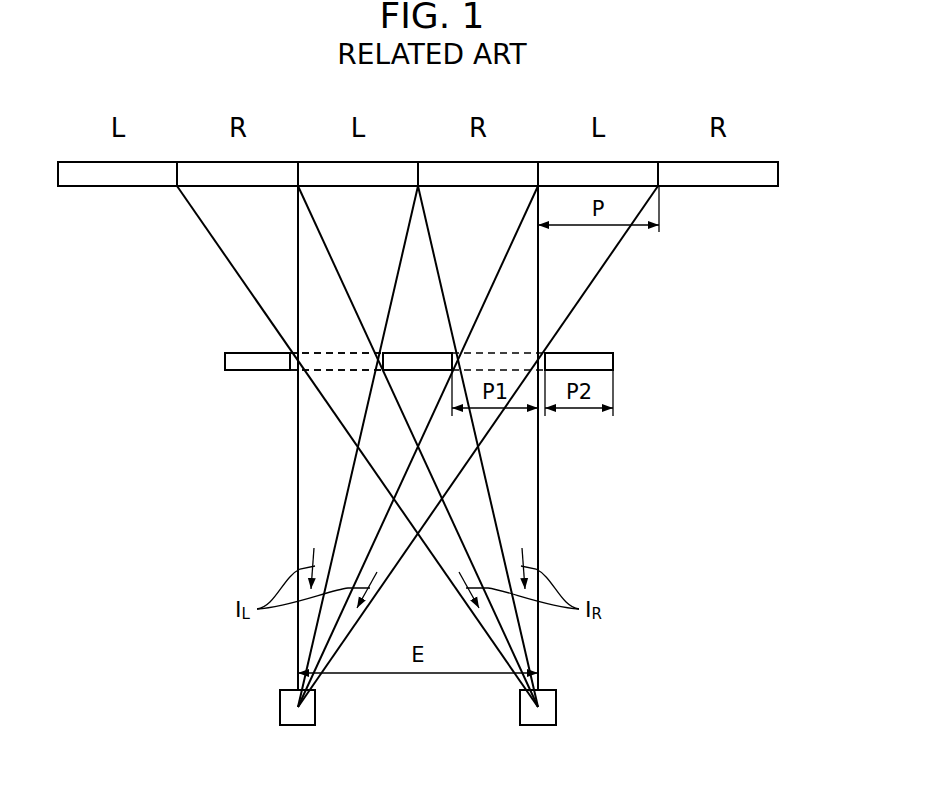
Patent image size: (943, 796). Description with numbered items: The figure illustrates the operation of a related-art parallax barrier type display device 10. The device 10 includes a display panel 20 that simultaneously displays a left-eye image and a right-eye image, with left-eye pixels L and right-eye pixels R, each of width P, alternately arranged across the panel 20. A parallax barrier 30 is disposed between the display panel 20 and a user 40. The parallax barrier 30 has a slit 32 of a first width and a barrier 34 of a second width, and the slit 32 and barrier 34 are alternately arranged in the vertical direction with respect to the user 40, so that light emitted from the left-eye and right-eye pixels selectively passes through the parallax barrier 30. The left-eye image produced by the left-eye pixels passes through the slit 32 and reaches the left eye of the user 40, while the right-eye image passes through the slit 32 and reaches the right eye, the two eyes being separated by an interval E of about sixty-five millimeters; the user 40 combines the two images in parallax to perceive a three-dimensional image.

The parallax barrier type display device 10 is at (433, 313).
The display panel 20 is at (738, 182).
The parallax barrier 30 is at (613, 361).
The slit 32 is at (334, 373).
The barrier 34 is at (246, 374).
The user 40 is at (586, 695).